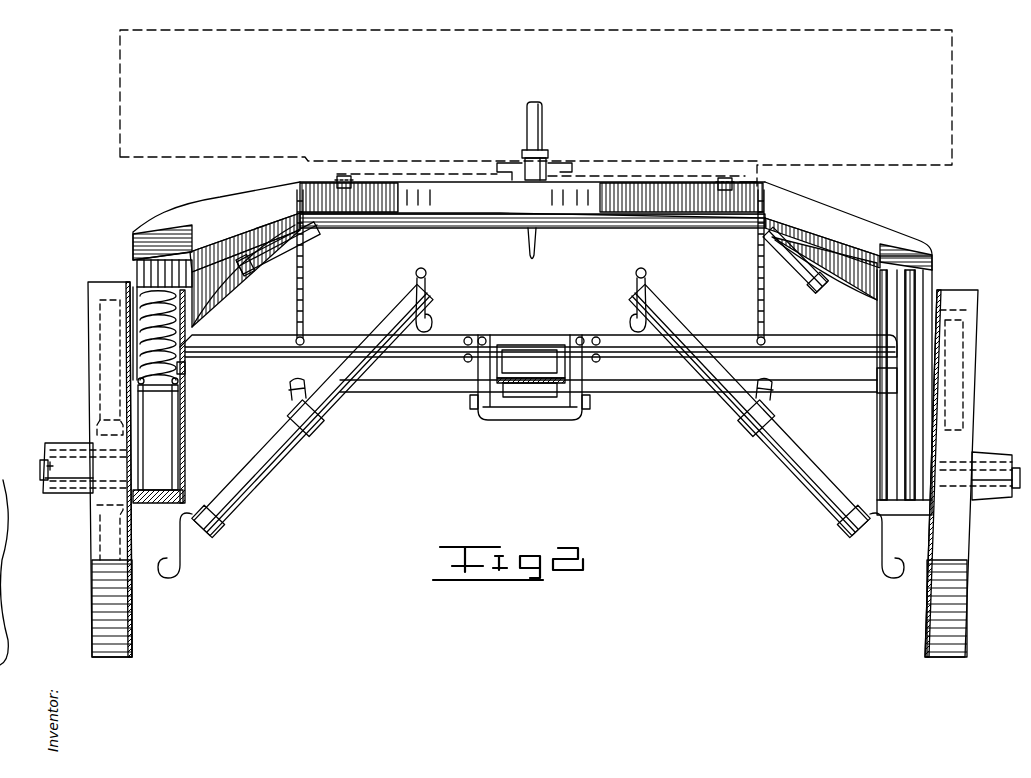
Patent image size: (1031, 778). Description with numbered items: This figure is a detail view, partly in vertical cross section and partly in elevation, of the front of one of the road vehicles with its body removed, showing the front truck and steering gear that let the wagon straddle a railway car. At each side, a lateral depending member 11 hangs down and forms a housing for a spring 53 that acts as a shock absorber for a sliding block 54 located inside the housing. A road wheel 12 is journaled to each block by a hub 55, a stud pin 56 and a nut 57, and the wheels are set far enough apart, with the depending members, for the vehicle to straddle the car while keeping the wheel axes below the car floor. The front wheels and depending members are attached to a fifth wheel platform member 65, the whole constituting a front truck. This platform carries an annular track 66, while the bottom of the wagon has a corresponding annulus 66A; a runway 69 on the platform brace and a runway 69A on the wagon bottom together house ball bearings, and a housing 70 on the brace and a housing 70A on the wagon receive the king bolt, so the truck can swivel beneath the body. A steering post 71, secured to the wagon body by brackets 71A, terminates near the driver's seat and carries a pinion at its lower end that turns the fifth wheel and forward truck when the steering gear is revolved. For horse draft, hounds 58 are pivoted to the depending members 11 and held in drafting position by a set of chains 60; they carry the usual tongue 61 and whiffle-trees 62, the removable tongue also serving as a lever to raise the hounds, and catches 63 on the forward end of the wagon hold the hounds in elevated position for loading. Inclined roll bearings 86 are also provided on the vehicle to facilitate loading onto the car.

The depending members 11 is at (183, 418).
The road wheels 12 is at (92, 395).
The springs 53 is at (200, 334).
The sliding blocks 54 is at (160, 445).
The hubs 55 is at (78, 440).
The stud pins 56 is at (47, 462).
The nuts 57 is at (40, 469).
The hounds 58 is at (340, 328).
The chains 60 is at (757, 272).
The tongue 61 is at (531, 364).
The whiffle-trees 62 is at (460, 391).
The catches 63 is at (536, 250).
The fifth wheel platform member 65 is at (622, 223).
The annular track 66 is at (532, 254).
The annulus 66A is at (744, 172).
The runway for ball bearings 69 is at (688, 222).
The ball bearing runway 69A is at (715, 177).
The housing for the king bolt 70 is at (573, 171).
The housing for the king bolt 70A is at (564, 160).
The steering post 71 is at (543, 110).
The brackets 71A is at (546, 156).
The inclined roll bearings 86 is at (792, 278).